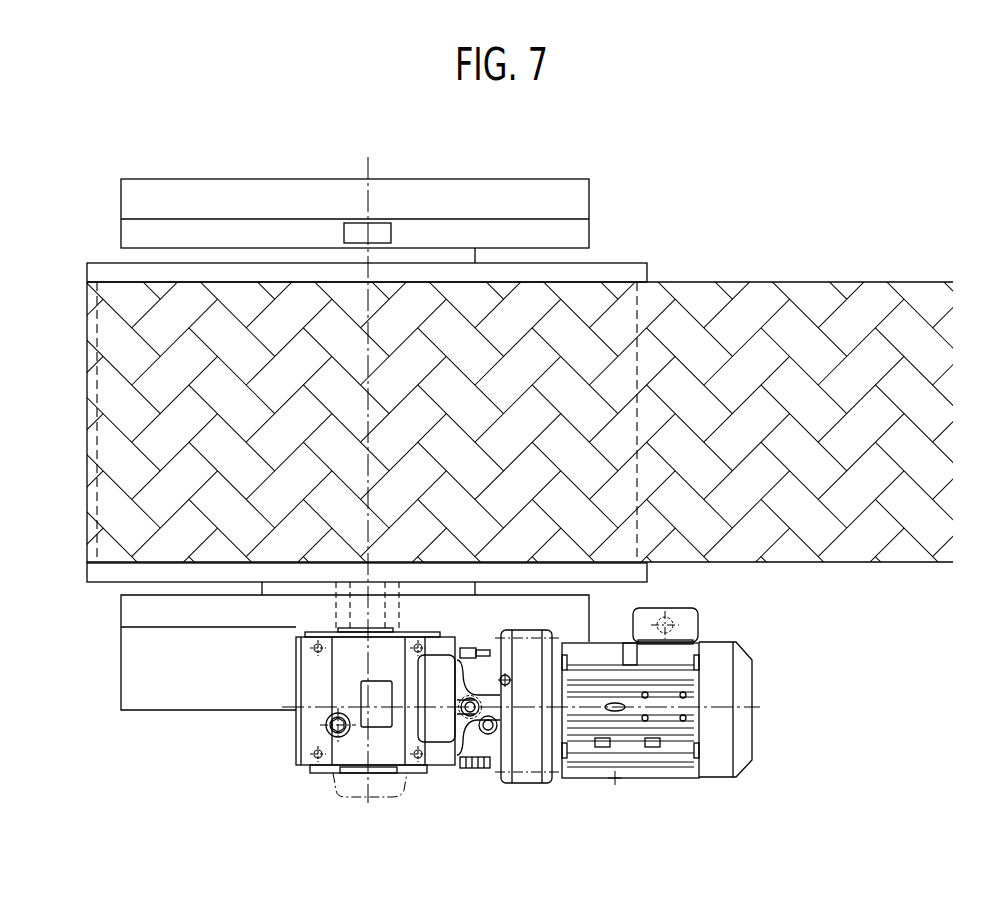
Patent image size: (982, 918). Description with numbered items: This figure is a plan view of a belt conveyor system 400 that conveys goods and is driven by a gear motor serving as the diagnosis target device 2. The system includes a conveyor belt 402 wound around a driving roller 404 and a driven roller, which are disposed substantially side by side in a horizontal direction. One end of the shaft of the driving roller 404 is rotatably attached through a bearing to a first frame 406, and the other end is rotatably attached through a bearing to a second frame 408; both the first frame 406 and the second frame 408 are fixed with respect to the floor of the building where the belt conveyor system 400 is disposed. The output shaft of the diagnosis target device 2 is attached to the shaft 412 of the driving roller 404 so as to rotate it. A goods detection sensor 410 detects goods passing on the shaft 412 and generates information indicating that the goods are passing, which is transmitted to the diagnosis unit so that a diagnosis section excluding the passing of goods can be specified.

The belt conveyor system 400 is at (62, 353).
The conveyor belt 402 is at (762, 290).
The driving roller 404 is at (103, 270).
The first frame 406 is at (128, 608).
The second frame 408 is at (577, 230).
The goods detection sensor 410 is at (381, 228).
The shaft of the driving roller 412 is at (603, 591).
The diagnosis target device 2 is at (343, 812).